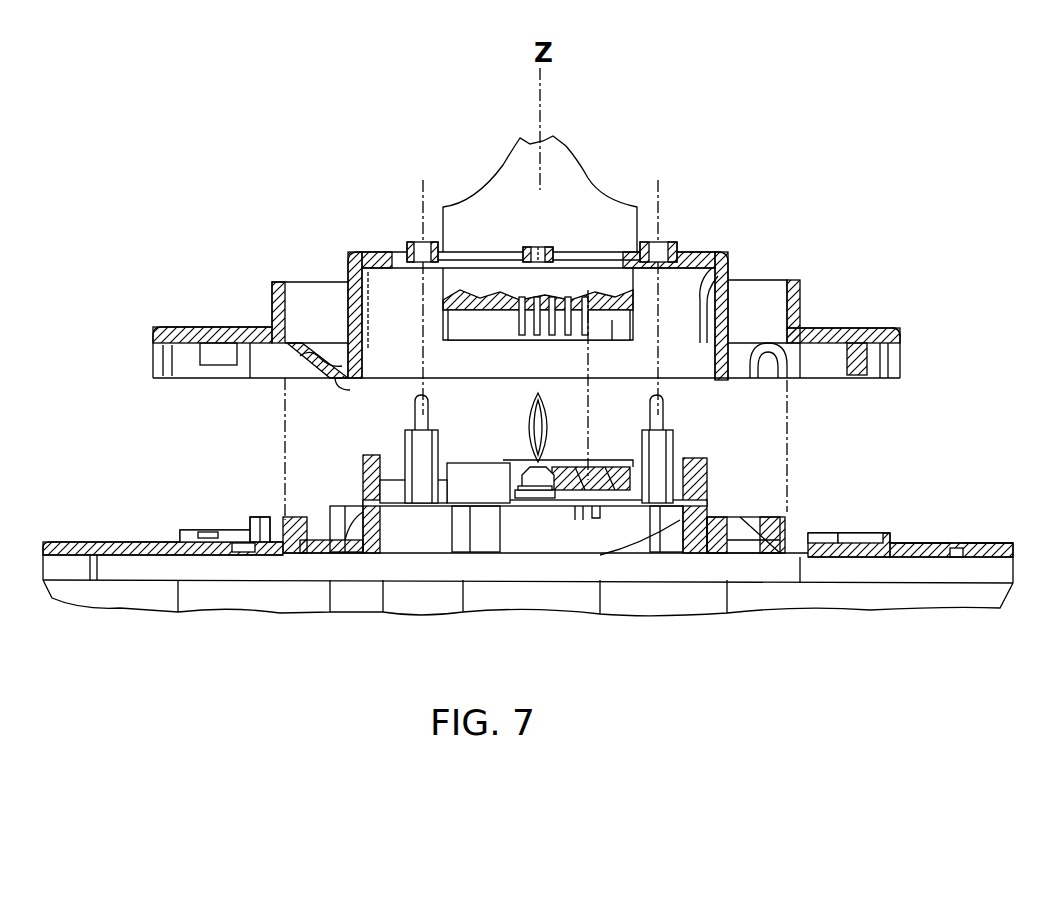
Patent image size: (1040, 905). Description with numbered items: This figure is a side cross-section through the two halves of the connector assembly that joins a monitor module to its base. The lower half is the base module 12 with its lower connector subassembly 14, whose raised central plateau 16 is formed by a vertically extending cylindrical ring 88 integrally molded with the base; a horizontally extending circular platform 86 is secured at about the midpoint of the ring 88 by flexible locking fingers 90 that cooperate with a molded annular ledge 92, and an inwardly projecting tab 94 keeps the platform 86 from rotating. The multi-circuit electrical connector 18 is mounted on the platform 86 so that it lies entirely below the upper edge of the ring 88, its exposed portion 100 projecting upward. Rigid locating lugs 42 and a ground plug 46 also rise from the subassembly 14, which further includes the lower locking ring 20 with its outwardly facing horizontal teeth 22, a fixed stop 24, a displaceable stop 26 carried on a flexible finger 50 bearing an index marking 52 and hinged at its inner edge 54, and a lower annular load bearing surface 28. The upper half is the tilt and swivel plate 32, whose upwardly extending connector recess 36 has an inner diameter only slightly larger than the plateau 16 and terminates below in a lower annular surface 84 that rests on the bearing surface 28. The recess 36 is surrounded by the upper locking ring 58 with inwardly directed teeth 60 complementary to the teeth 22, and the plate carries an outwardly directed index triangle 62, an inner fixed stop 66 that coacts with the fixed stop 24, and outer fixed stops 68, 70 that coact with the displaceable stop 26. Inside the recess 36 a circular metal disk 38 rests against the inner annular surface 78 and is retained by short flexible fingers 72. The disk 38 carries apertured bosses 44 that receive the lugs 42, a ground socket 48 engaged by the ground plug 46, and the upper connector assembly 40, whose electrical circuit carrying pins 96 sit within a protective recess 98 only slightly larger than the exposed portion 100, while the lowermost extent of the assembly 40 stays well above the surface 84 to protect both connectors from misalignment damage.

The base module 12 is at (995, 542).
The lower connector subassembly 14 is at (908, 492).
The raised central plateau 16 is at (692, 458).
The multi-circuit electrical connector 18 is at (468, 480).
The lower locking ring 20 is at (312, 522).
The horizontal teeth 22 is at (298, 515).
The fixed stop 24 is at (252, 517).
The displaceable stop 26 is at (862, 533).
The lower annular load bearing surface 28 is at (345, 535).
The tilt and swivel plate 32 is at (900, 345).
The connector recess 36 is at (462, 360).
The circular metal disk 38 is at (372, 252).
The connector assembly 40 is at (625, 278).
The locating lugs 42 is at (428, 420).
The apertured bosses 44 is at (412, 242).
The ground plug 46 is at (545, 425).
The ground socket 48 is at (545, 252).
The flexible finger 50 is at (885, 565).
The index marking 52 is at (905, 552).
The inner edge 54 is at (815, 532).
The upper locking ring 58 is at (285, 372).
The inwardly directed teeth 60 is at (776, 368).
The index triangle 62 is at (878, 330).
The inner fixed stop 66 is at (262, 352).
The outer fixed stop 68 is at (207, 358).
The outer fixed stop 70 is at (845, 366).
The flexible fingers 72 is at (712, 285).
The inner annular surface 78 is at (708, 262).
The lower annular surface 84 is at (340, 380).
The circular platform 86 is at (597, 512).
The cylindrical ring 88 is at (702, 508).
The flexible locking fingers 90 is at (365, 518).
The annular ledge 92 is at (690, 560).
The inwardly projecting tab 94 is at (600, 512).
The electrical circuit carrying pins 96 is at (518, 322).
The protective recess 98 is at (622, 322).
The exposed portion 100 is at (608, 472).